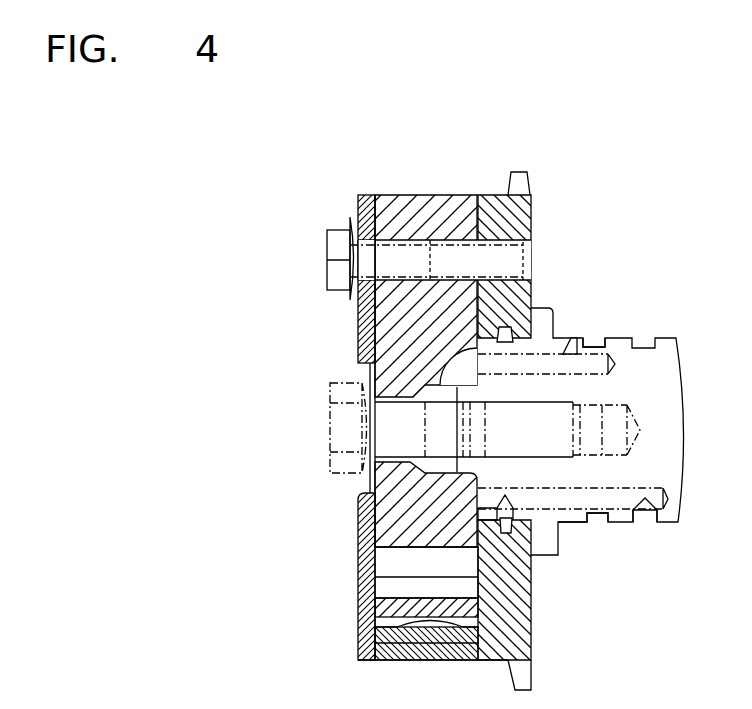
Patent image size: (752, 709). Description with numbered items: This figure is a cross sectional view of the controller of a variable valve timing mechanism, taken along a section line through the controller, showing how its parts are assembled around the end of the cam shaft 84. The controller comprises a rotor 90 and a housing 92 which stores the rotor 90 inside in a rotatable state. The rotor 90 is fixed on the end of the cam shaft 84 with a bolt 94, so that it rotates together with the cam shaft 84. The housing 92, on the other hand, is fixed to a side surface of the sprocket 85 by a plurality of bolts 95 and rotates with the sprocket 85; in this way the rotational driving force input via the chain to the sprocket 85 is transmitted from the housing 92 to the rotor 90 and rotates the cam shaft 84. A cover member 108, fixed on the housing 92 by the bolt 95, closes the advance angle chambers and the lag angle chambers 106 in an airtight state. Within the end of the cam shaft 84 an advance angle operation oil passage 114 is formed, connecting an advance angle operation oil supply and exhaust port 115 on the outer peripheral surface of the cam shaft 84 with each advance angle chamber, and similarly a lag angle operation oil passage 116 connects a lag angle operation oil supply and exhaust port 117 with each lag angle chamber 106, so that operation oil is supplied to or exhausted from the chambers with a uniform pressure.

The cam shaft 84 is at (668, 333).
The sprocket 85 is at (517, 172).
The rotor 90 is at (385, 520).
The housing 92 is at (421, 195).
The bolt 94 is at (330, 425).
The bolt 95 is at (327, 258).
The lag angle chamber 106 is at (385, 565).
The cover member 108 is at (358, 330).
The advance angle operation oil passage 114 is at (569, 337).
The advance angle operation oil supply and exhaust port 115 is at (597, 338).
The lag angle operation oil passage 116 is at (571, 523).
The lag angle operation oil supply and exhaust port 117 is at (646, 523).